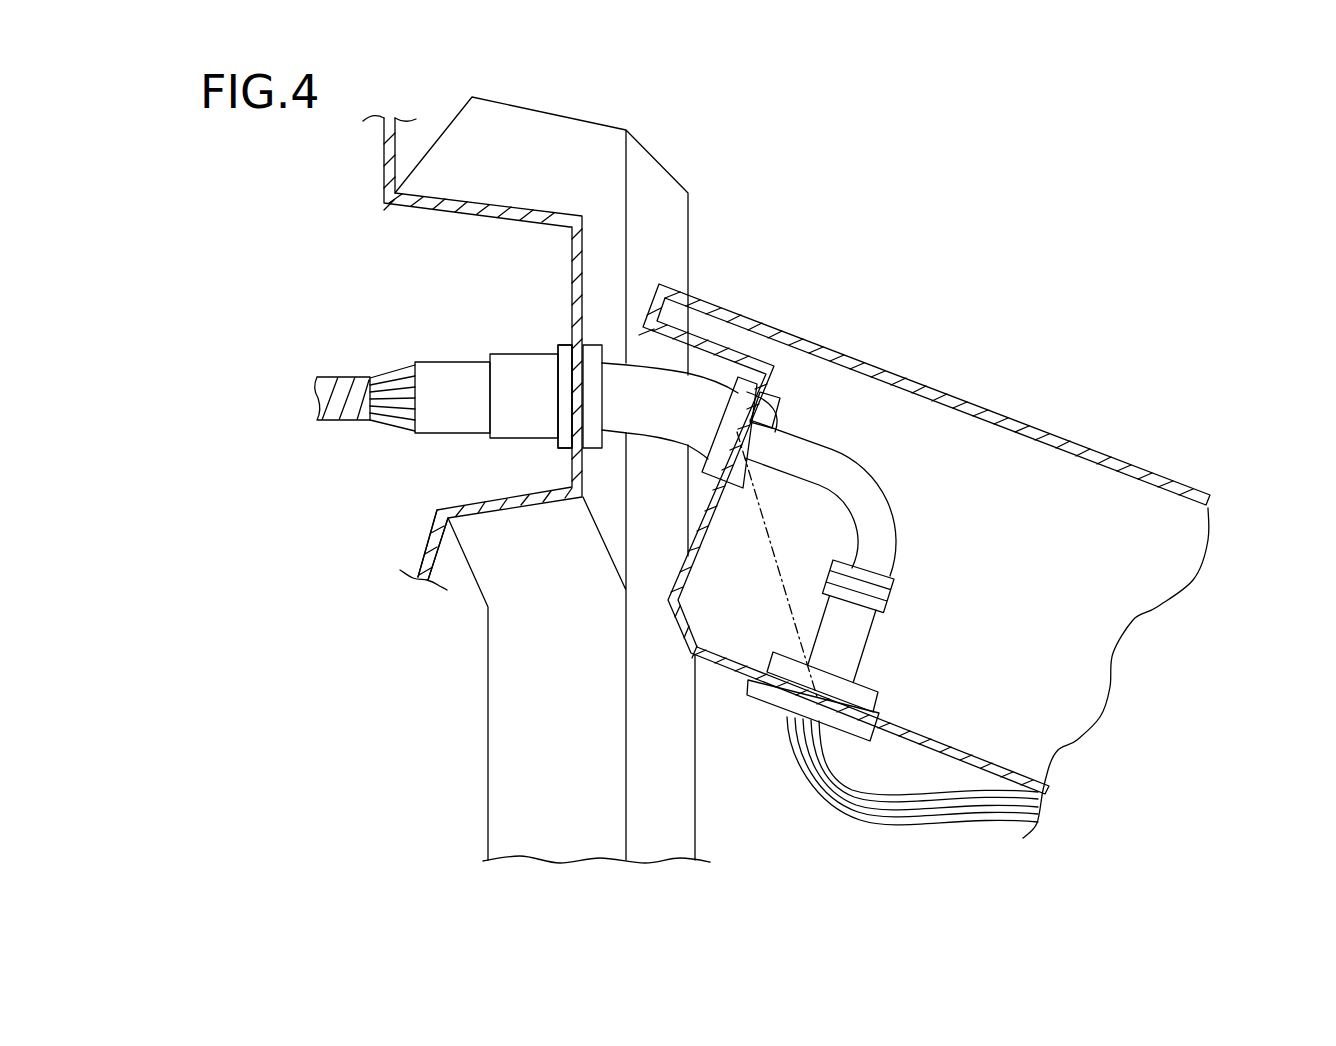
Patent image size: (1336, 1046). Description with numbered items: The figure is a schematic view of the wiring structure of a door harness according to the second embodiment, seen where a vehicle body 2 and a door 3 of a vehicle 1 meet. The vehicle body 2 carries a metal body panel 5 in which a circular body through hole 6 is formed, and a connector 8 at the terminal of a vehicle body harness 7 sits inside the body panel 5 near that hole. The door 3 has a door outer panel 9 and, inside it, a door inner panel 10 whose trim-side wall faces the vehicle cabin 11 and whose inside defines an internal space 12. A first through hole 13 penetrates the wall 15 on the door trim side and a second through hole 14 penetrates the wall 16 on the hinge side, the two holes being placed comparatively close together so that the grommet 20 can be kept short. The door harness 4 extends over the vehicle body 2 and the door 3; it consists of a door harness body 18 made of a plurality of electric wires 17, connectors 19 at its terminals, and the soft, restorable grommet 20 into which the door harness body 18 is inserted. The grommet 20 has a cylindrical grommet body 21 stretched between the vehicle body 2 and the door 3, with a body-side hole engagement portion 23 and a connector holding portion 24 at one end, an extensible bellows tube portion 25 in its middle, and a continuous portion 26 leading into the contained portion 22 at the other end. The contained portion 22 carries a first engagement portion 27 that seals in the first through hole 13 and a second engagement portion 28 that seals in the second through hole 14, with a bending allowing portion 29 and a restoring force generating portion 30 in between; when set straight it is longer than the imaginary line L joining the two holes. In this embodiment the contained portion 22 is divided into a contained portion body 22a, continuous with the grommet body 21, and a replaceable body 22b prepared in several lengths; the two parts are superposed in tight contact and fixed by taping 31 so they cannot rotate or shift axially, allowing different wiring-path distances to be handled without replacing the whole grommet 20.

The vehicle 1 is at (889, 202).
The vehicle body 2 is at (657, 162).
The door 3 is at (903, 378).
The door harness 4 is at (814, 799).
The body panel 5 is at (455, 213).
The body through hole 6 is at (577, 360).
The vehicle body harness 7 is at (330, 378).
The connector 8 is at (450, 376).
The door outer panel 9 is at (982, 418).
The door inner panel 10 is at (962, 758).
The vehicle cabin 11 is at (424, 735).
The internal space 12 is at (1077, 606).
The first through hole 13 is at (862, 683).
The second through hole 14 is at (772, 423).
The wall 15 is at (733, 668).
The wall 16 is at (688, 549).
The electric wires 17 is at (1013, 795).
The door harness body 18 is at (862, 822).
The connectors 19 is at (507, 410).
The grommet 20 is at (898, 517).
The grommet body 21 is at (656, 385).
The contained portion 22 is at (1192, 670).
The contained portion body 22a is at (824, 437).
The replaceable body 22b is at (845, 657).
The body-side hole engagement portion 23 is at (588, 340).
The connector holding portion 24 is at (563, 420).
The bellows tube portion 25 is at (668, 417).
The continuous portion 26 is at (716, 422).
The first engagement portion 27 is at (771, 700).
The second engagement portion 28 is at (768, 397).
The bending allowing portion 29 is at (864, 497).
The restoring force generating portion 30 is at (850, 627).
The taping 31 is at (894, 583).
The imaginary line L is at (770, 548).